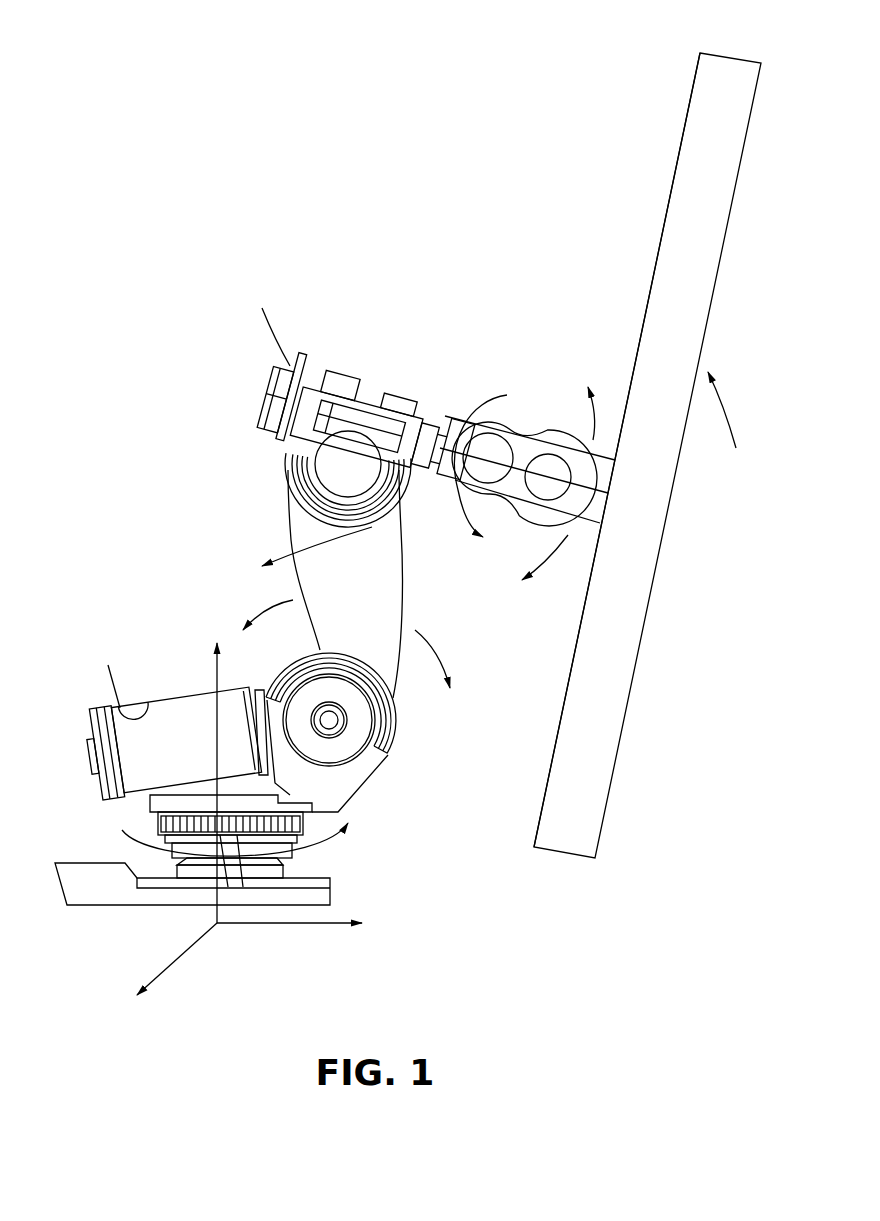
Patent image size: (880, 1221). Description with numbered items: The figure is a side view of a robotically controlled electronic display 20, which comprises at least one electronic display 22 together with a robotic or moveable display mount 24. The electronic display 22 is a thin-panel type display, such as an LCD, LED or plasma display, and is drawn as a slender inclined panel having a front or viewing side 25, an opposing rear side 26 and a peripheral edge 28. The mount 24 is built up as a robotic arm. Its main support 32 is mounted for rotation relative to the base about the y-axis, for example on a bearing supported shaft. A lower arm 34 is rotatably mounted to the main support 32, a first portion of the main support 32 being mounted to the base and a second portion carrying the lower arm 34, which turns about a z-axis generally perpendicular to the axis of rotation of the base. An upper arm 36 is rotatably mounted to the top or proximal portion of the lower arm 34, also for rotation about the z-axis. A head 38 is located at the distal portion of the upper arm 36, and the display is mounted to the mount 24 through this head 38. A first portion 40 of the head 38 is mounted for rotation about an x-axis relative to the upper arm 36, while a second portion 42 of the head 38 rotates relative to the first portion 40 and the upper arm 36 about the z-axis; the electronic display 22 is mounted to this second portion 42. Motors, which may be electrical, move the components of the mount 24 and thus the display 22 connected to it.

The robotically controlled electronic display 20 is at (375, 72).
The electronic display 22 is at (614, 140).
The robotic or moveable display mount 24 is at (175, 348).
The front or viewing side 25 is at (735, 419).
The rear side 26 is at (638, 265).
The peripheral edge 28 is at (712, 100).
The main support 32 is at (378, 783).
The lower arm 34 is at (420, 569).
The upper arm 36 is at (384, 375).
The head 38 is at (540, 352).
The first portion of the head 40 is at (463, 395).
The second portion of the head 42 is at (562, 402).